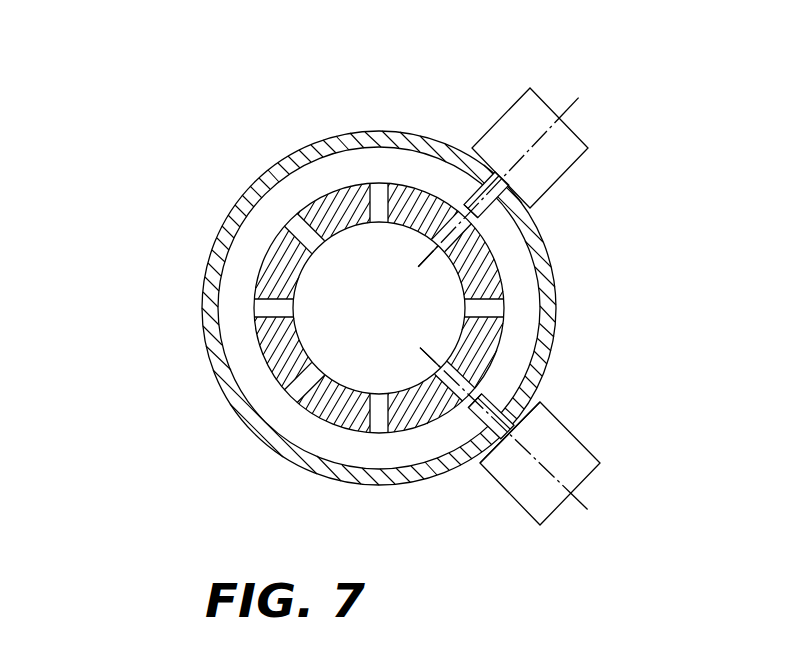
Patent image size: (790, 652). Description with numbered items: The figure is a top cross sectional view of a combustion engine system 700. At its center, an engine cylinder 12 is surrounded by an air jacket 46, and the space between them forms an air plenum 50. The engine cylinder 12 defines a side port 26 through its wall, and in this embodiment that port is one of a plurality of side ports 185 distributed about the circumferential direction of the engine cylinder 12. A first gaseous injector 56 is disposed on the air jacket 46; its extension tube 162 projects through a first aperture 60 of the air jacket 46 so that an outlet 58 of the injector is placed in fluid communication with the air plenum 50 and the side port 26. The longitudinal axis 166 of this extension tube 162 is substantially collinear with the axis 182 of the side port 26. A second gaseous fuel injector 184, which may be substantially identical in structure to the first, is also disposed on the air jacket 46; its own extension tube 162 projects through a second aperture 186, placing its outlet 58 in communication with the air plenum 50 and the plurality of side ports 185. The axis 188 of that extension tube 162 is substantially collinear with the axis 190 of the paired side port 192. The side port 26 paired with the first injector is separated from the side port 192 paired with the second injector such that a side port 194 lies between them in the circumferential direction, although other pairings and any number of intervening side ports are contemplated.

The combustion engine system 700 is at (159, 168).
The engine cylinder 12 is at (262, 270).
The air jacket 46 is at (230, 403).
The air plenum 50 is at (293, 427).
The side port 26 is at (467, 222).
The plurality of side ports 185 is at (452, 213).
The side port 194 is at (465, 303).
The axis of the side port 182 is at (428, 252).
The axis of the side port 190 is at (427, 350).
The side port 192 is at (420, 356).
The first gaseous injector 56 is at (576, 132).
The outlet 58 is at (500, 208).
The first aperture 60 is at (486, 175).
The extension tube 162 is at (465, 200).
The longitudinal axis of the extension tube 166 is at (567, 110).
The second gaseous fuel injector 184 is at (563, 505).
The second aperture 186 is at (508, 430).
The axis of the extension tube 188 is at (590, 503).